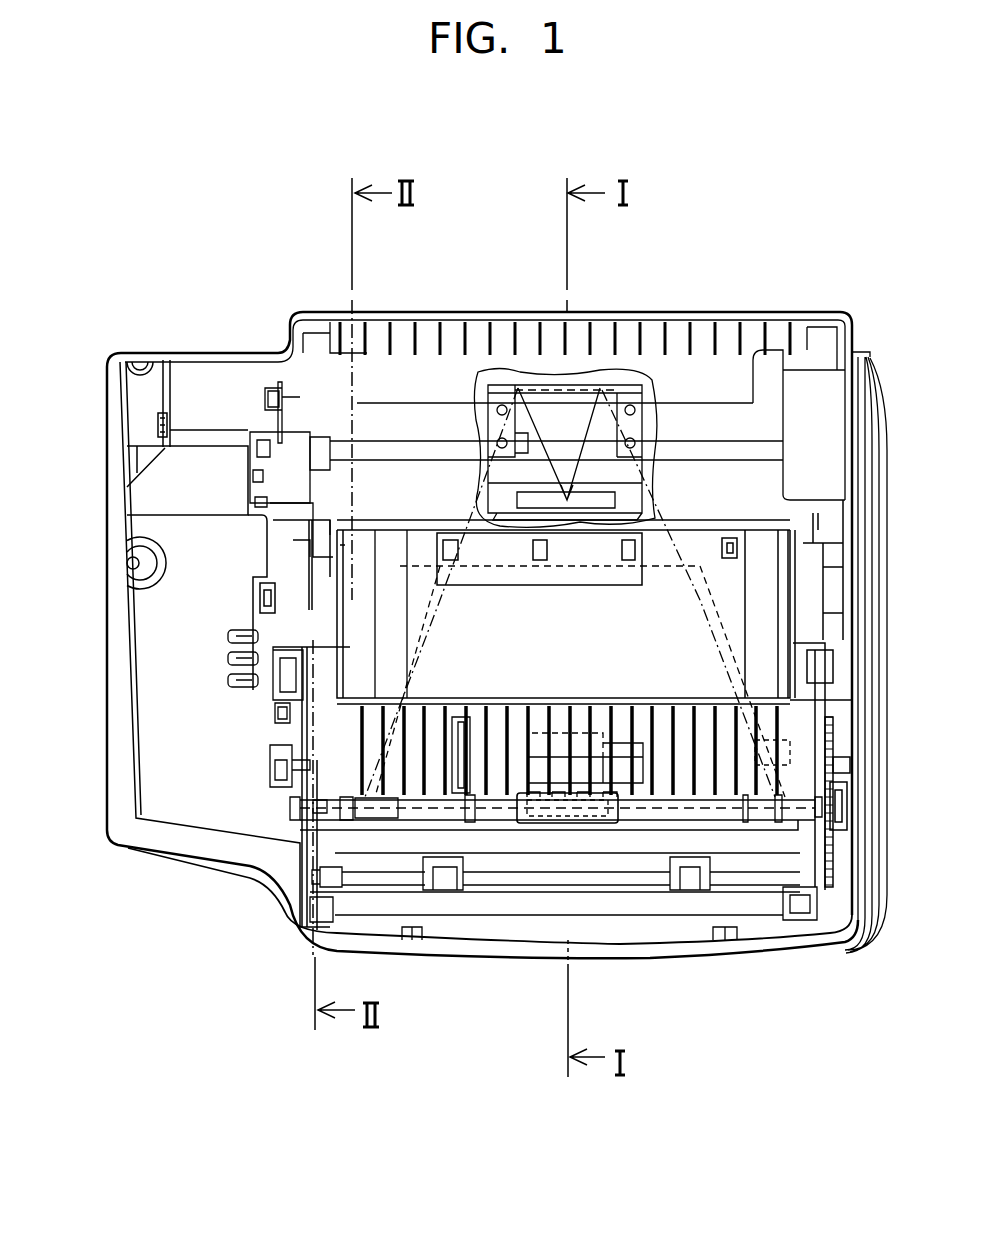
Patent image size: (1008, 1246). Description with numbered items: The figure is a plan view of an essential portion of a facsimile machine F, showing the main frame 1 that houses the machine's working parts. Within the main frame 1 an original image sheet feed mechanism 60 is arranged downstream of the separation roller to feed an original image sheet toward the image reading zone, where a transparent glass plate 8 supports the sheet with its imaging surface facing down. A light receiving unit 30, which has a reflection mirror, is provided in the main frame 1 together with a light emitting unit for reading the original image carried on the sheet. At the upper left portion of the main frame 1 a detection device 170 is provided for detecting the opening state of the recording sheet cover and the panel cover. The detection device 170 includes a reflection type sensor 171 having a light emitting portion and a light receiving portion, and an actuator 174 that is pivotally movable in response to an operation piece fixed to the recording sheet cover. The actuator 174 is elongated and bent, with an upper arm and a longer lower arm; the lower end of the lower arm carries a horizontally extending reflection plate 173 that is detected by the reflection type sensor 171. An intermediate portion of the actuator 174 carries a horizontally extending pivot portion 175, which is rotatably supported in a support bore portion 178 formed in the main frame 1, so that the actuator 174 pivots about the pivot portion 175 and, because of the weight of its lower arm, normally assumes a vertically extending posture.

The main frame 1 is at (617, 955).
The transparent glass plate 8 is at (778, 850).
The light receiving unit 30 is at (600, 372).
The original image sheet feed mechanism 60 is at (555, 842).
The detection device 170 is at (286, 676).
The reflection type sensor 171 is at (268, 773).
The reflection plate 173 is at (300, 770).
The actuator 174 is at (300, 648).
The pivot portion 175 is at (398, 670).
The support bore portion 178 is at (290, 712).
The facsimile machine F is at (681, 303).